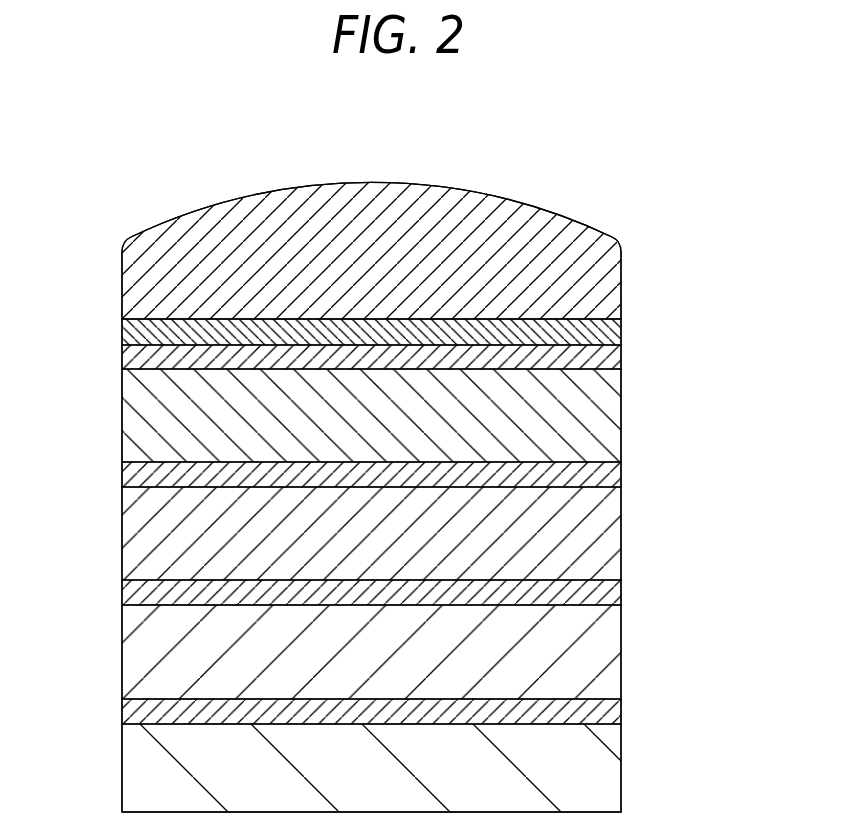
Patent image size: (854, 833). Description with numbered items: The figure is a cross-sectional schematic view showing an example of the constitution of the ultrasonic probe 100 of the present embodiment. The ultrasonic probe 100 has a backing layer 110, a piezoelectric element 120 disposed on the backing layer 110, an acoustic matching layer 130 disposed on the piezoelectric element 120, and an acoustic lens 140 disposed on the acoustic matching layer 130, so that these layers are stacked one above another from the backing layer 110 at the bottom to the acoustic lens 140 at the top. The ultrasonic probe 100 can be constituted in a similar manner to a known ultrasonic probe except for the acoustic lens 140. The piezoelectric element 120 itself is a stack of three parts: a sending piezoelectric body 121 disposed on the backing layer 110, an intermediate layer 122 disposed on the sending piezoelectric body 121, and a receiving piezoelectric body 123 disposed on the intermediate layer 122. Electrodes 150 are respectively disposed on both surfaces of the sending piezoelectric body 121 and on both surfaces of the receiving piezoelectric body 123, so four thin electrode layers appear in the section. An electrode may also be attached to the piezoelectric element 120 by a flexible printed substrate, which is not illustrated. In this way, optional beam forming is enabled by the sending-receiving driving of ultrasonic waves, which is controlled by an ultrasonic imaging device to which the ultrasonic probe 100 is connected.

The ultrasonic probe 100 is at (590, 125).
The backing layer 110 is at (612, 776).
The piezoelectric element 120 is at (446, 534).
The sending piezoelectric body 121 is at (411, 652).
The intermediate layer 122 is at (612, 531).
The receiving piezoelectric body 123 is at (612, 420).
The acoustic matching layer 130 is at (612, 333).
The acoustic lens 140 is at (612, 285).
The electrodes 150 is at (127, 362).